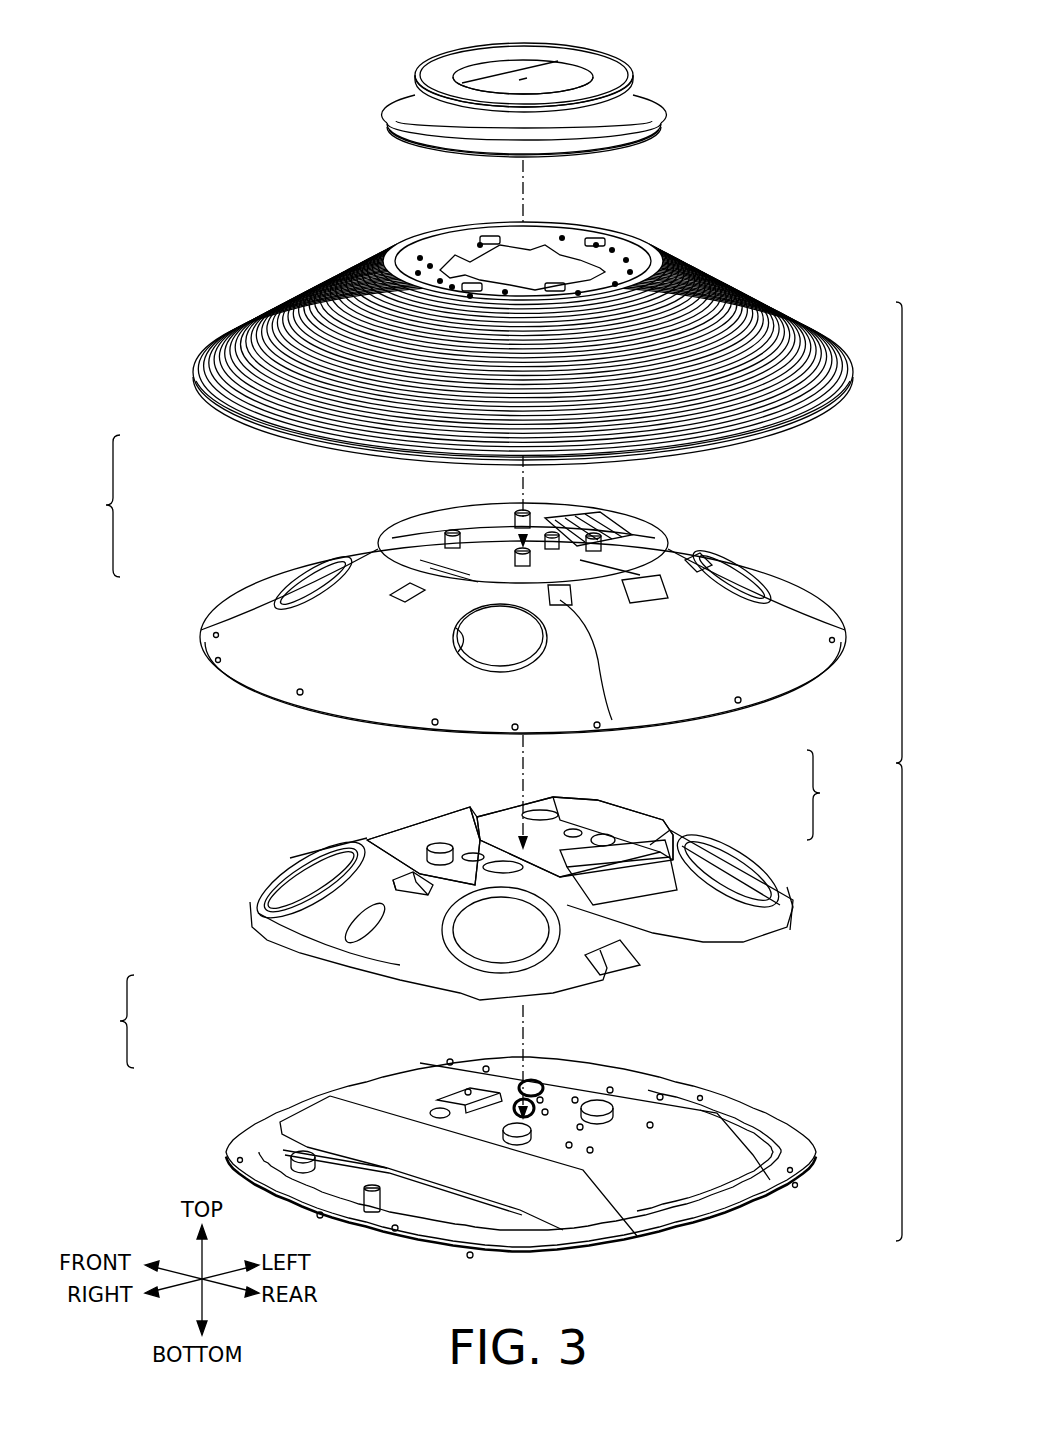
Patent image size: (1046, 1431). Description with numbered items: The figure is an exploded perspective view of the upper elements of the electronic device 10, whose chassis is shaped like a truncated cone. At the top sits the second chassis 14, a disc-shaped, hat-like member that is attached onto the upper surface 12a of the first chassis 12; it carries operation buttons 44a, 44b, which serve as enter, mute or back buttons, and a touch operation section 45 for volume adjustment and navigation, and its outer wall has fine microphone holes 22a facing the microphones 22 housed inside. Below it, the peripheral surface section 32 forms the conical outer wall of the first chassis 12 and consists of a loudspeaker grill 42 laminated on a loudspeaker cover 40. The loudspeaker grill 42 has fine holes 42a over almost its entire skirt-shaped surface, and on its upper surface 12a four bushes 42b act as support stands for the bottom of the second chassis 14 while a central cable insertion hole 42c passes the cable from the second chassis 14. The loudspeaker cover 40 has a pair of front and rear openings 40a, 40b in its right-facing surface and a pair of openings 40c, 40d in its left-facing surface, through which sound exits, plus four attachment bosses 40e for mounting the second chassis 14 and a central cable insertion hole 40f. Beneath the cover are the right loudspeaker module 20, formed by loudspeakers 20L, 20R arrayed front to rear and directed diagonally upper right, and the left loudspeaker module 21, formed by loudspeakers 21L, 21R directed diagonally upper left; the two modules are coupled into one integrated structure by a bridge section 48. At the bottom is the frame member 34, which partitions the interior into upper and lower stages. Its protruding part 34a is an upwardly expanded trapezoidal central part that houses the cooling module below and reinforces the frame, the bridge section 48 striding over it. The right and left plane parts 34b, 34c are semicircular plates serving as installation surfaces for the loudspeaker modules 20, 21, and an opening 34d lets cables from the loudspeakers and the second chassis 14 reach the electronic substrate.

The electronic device 10 is at (181, 84).
The first chassis 12 is at (921, 771).
The upper surface 12a is at (615, 253).
The second chassis 14 is at (668, 95).
The right loudspeaker module 20 is at (470, 909).
The loudspeaker 20R is at (315, 882).
The loudspeaker 20L is at (485, 935).
The left loudspeaker module 21 is at (833, 795).
The loudspeaker 21L is at (582, 810).
The loudspeaker 21R is at (710, 862).
The microphone 22 is at (718, 148).
The microphone hole 22a is at (346, 170).
The peripheral surface section 32 is at (94, 506).
The frame member 34 is at (552, 1169).
The protruding part 34a is at (560, 1085).
The right plane part 34b is at (405, 1210).
The left plane part 34c is at (782, 1135).
The opening 34d is at (460, 1095).
The loudspeaker cover 40 is at (482, 627).
The opening 40a is at (470, 650).
The opening 40b is at (312, 592).
The opening 40c is at (550, 513).
The opening 40d is at (734, 577).
The attachment boss 40e is at (452, 532).
The cable insertion hole 40f is at (547, 550).
The loudspeaker grill 42 is at (485, 340).
The hole 42a is at (841, 272).
The bush 42b is at (485, 238).
The cable insertion hole 42c is at (445, 265).
The operation button 44a is at (488, 70).
The operation button 44b is at (562, 70).
The touch operation section 45 is at (398, 116).
The bridge section 48 is at (400, 845).